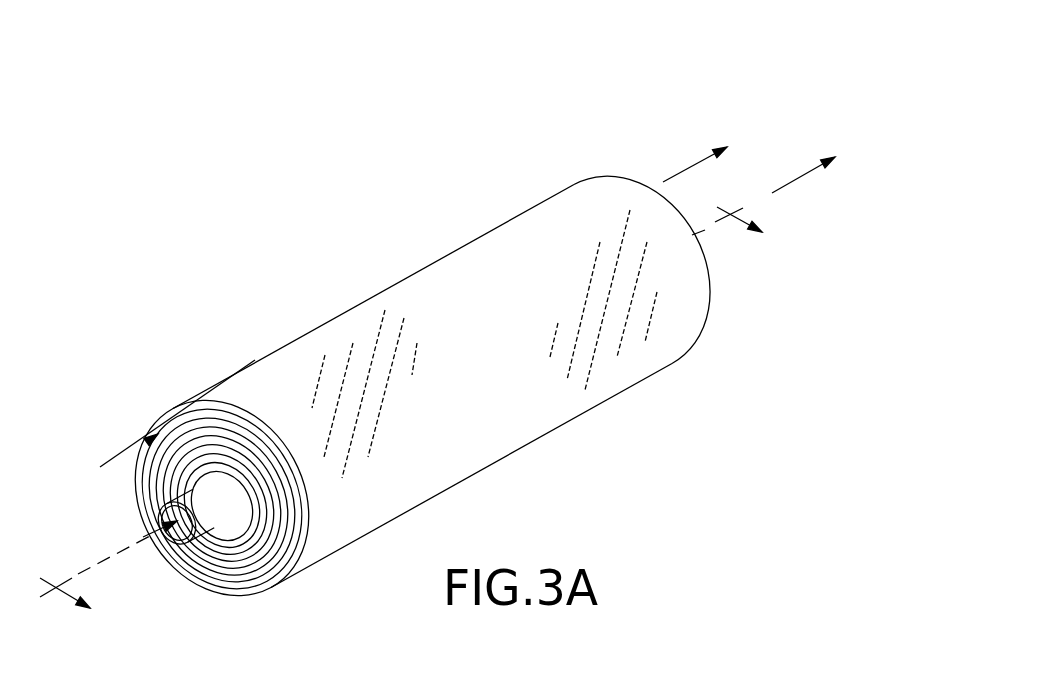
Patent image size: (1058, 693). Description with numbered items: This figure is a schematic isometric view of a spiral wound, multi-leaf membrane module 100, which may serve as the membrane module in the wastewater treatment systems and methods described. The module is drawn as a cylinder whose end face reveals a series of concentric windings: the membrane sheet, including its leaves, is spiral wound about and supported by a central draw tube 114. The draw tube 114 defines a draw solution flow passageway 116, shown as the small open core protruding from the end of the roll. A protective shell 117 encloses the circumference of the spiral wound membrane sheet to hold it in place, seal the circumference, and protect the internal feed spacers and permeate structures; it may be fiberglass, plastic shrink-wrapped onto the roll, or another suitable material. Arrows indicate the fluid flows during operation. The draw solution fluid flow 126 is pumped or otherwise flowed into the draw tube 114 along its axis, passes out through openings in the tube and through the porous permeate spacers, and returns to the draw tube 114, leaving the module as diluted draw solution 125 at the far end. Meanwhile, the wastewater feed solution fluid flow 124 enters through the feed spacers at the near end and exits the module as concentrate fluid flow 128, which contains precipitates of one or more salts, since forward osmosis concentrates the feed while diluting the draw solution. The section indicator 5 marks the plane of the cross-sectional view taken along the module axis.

The multi-leaf membrane module 100 is at (448, 321).
The draw tube 114 is at (213, 527).
The draw solution flow passageway 116 is at (164, 534).
The protective shell 117 is at (650, 361).
The wastewater feed solution fluid flow 124 is at (115, 453).
The diluted draw solution 125 is at (821, 164).
The draw solution fluid flow 126 is at (128, 551).
The concentrate fluid flow 128 is at (716, 153).
The section line 5- 5 is at (395, 399).